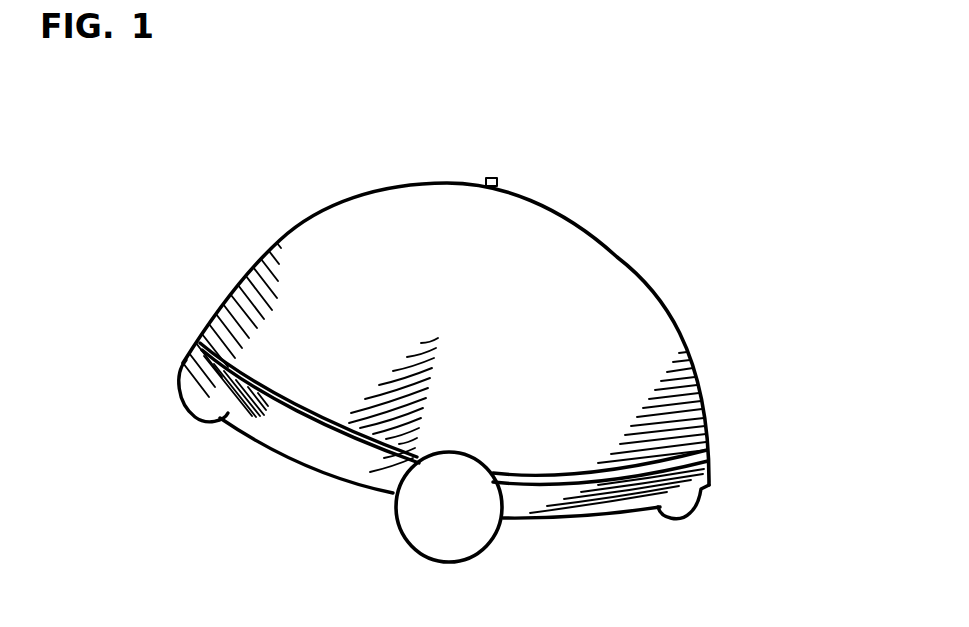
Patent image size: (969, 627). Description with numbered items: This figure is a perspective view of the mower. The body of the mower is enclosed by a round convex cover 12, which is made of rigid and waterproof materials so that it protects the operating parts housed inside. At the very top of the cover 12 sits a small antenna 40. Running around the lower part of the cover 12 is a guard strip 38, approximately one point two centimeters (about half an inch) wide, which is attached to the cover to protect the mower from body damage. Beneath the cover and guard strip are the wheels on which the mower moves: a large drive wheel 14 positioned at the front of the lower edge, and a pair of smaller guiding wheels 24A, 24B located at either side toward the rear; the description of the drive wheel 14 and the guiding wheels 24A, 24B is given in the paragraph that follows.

The round convex cover 12 is at (650, 285).
The drive wheel 14 is at (488, 543).
The guiding wheel 24A is at (183, 387).
The guiding wheel 24B is at (705, 493).
The guard strip 38 is at (230, 348).
The antenna 40 is at (497, 177).